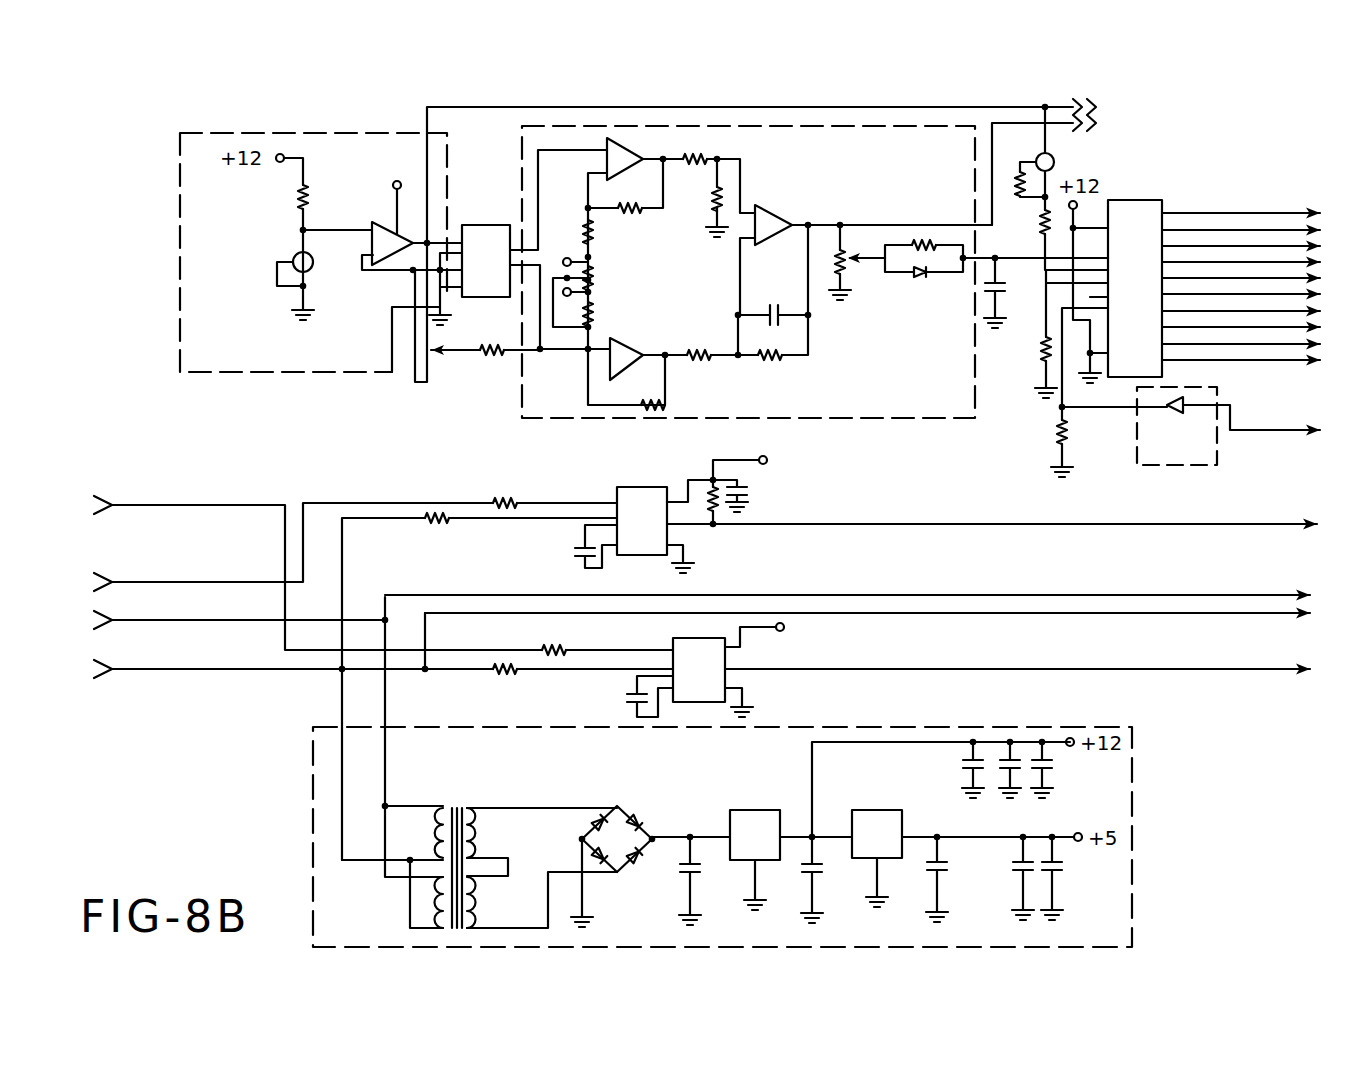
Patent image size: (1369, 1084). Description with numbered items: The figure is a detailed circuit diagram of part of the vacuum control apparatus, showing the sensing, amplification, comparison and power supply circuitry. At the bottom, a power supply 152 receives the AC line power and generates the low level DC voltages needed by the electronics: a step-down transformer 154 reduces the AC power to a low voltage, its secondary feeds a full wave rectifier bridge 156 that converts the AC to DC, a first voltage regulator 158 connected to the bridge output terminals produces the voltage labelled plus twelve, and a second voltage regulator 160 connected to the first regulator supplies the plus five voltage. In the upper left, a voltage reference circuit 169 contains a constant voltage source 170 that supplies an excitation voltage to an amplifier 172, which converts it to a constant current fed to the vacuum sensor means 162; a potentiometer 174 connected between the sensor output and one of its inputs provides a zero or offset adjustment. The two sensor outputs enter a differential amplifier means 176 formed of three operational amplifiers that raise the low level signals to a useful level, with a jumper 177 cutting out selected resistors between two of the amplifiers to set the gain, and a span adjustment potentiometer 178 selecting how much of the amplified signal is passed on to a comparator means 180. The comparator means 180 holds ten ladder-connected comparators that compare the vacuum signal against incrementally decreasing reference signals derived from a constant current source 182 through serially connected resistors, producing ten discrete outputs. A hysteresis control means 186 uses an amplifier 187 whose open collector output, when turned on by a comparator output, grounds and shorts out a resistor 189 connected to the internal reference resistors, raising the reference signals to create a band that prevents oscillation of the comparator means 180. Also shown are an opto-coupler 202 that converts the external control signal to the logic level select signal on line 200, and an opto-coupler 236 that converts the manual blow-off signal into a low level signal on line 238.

The voltage reference circuit 169 is at (186, 270).
The constant voltage source 170 is at (292, 262).
The amplifier 172 is at (390, 228).
The vacuum sensor means 162 is at (478, 222).
The potentiometer 174 is at (438, 357).
The differential amplifier means 176 is at (888, 400).
The jumper 177 is at (592, 280).
The span adjustment potentiometer 178 is at (858, 264).
The constant current source 182 is at (1055, 160).
The comparator means 180 is at (1138, 201).
The amplifier 187 is at (1185, 399).
The hysteresis control means 186 is at (1197, 450).
The resistor 189 is at (1058, 436).
The opto-coupler 202 is at (618, 490).
The line 200 is at (890, 526).
The opto-coupler 236 is at (725, 663).
The line 238 is at (1088, 667).
The power supply 152 is at (537, 742).
The step-down transformer 154 is at (458, 800).
The full wave rectifier bridge 156 is at (615, 806).
The first voltage regulator 158 is at (746, 811).
The second voltage regulator 160 is at (867, 812).